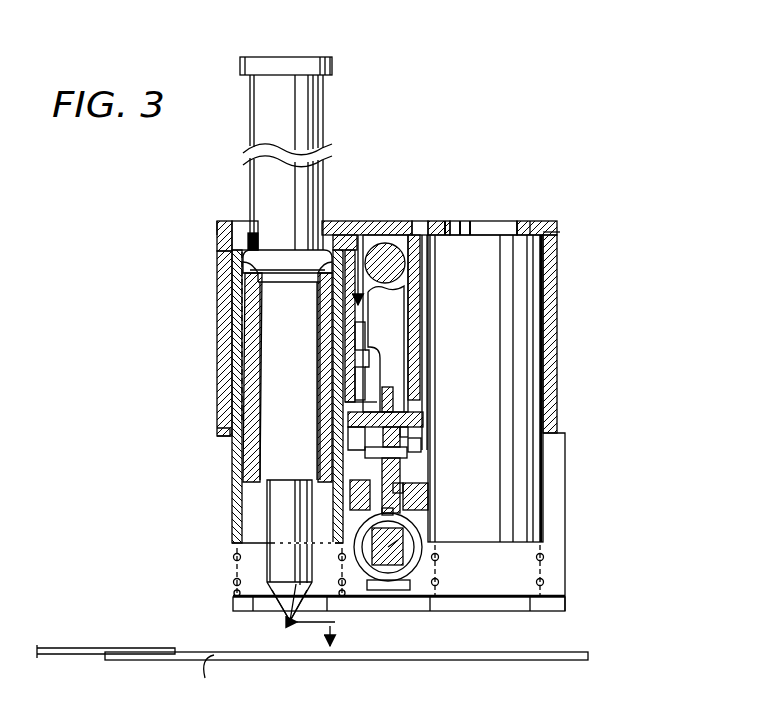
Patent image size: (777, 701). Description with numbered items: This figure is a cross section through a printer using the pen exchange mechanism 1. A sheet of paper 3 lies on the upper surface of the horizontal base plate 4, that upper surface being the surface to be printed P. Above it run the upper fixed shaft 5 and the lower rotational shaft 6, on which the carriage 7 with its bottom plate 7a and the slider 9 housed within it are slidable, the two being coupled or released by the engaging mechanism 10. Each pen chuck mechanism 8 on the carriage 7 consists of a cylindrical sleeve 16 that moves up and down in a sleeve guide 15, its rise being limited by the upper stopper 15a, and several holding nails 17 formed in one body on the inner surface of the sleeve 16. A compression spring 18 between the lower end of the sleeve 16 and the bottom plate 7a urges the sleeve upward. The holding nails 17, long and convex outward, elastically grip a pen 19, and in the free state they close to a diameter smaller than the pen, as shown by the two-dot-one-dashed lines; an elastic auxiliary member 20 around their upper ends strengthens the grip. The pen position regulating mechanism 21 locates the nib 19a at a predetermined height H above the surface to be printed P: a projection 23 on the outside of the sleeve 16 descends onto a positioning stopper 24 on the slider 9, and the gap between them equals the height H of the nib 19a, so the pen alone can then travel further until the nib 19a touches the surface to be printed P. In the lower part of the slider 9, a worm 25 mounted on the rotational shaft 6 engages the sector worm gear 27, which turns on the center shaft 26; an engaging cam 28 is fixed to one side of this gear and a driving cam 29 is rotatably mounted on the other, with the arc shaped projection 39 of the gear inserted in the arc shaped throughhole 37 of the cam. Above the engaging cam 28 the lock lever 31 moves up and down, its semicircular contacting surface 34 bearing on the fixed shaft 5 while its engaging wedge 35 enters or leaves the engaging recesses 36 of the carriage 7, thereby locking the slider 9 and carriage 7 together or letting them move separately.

The pen exchange mechanism 1 is at (434, 160).
The sheet of paper 3 is at (86, 648).
The base plate 4 is at (570, 652).
The upper fixed shaft 5 is at (392, 317).
The lower rotational shaft 6 is at (387, 563).
The carriage 7 is at (555, 333).
The bottom plate 7a is at (233, 605).
The pen chuck mechanism 8 is at (224, 312).
The slider 9 is at (396, 243).
The engaging mechanism 10 is at (357, 232).
The sleeve guide 15 is at (219, 421).
The upper stopper 15a is at (247, 222).
The sleeve 16 is at (232, 522).
The holding nails 17 is at (326, 486).
The compression spring 18 is at (234, 590).
The pen 19 is at (312, 112).
The nib 19a is at (291, 624).
The elastic auxiliary member 20 is at (244, 264).
The pen position regulating mechanism 21 is at (437, 413).
The projection 23 is at (348, 418).
The positioning stopper 24 is at (352, 497).
The worm 25 is at (408, 562).
The center shaft 26 is at (407, 458).
The sector worm gear 27 is at (400, 397).
The engaging cam 28 is at (325, 398).
The driving cam 29 is at (422, 427).
The lock lever 31 is at (430, 300).
The contacting surface 34 is at (419, 278).
The engaging wedge 35 is at (356, 332).
The engaging recesses 36 is at (356, 378).
The arc shaped throughhole 37 is at (423, 493).
The arc shaped projection 39 is at (413, 478).
The surface to be printed P is at (207, 677).
The height H is at (323, 637).